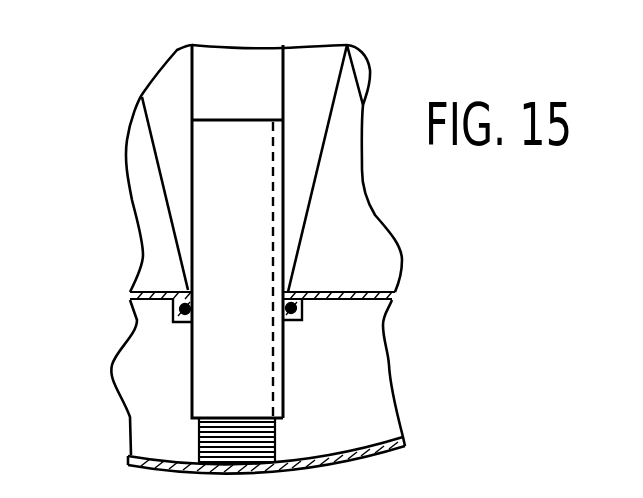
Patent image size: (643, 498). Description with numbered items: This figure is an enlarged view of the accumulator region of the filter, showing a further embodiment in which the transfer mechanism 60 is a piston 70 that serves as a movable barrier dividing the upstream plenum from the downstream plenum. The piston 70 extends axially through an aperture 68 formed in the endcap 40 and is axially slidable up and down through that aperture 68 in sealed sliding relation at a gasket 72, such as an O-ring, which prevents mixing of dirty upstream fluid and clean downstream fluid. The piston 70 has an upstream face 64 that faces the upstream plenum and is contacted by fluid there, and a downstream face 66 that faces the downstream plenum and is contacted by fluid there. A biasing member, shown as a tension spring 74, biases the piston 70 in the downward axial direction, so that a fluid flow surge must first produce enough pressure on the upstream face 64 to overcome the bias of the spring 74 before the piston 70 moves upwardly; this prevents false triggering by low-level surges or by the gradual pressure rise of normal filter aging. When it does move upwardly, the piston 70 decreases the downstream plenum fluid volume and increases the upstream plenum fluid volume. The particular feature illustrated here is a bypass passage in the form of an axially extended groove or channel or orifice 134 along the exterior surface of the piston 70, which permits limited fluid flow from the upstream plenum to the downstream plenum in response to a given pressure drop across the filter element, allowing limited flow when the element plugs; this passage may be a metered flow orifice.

The endcap 40 is at (373, 293).
The transfer mechanism 60 is at (283, 372).
The upstream face 64 is at (283, 420).
The downstream face 66 is at (234, 118).
The aperture 68 is at (288, 293).
The piston 70 is at (218, 335).
The gasket 72 is at (293, 303).
The tension spring 74 is at (198, 438).
The axially extended groove or channel or orifice 134 is at (273, 148).